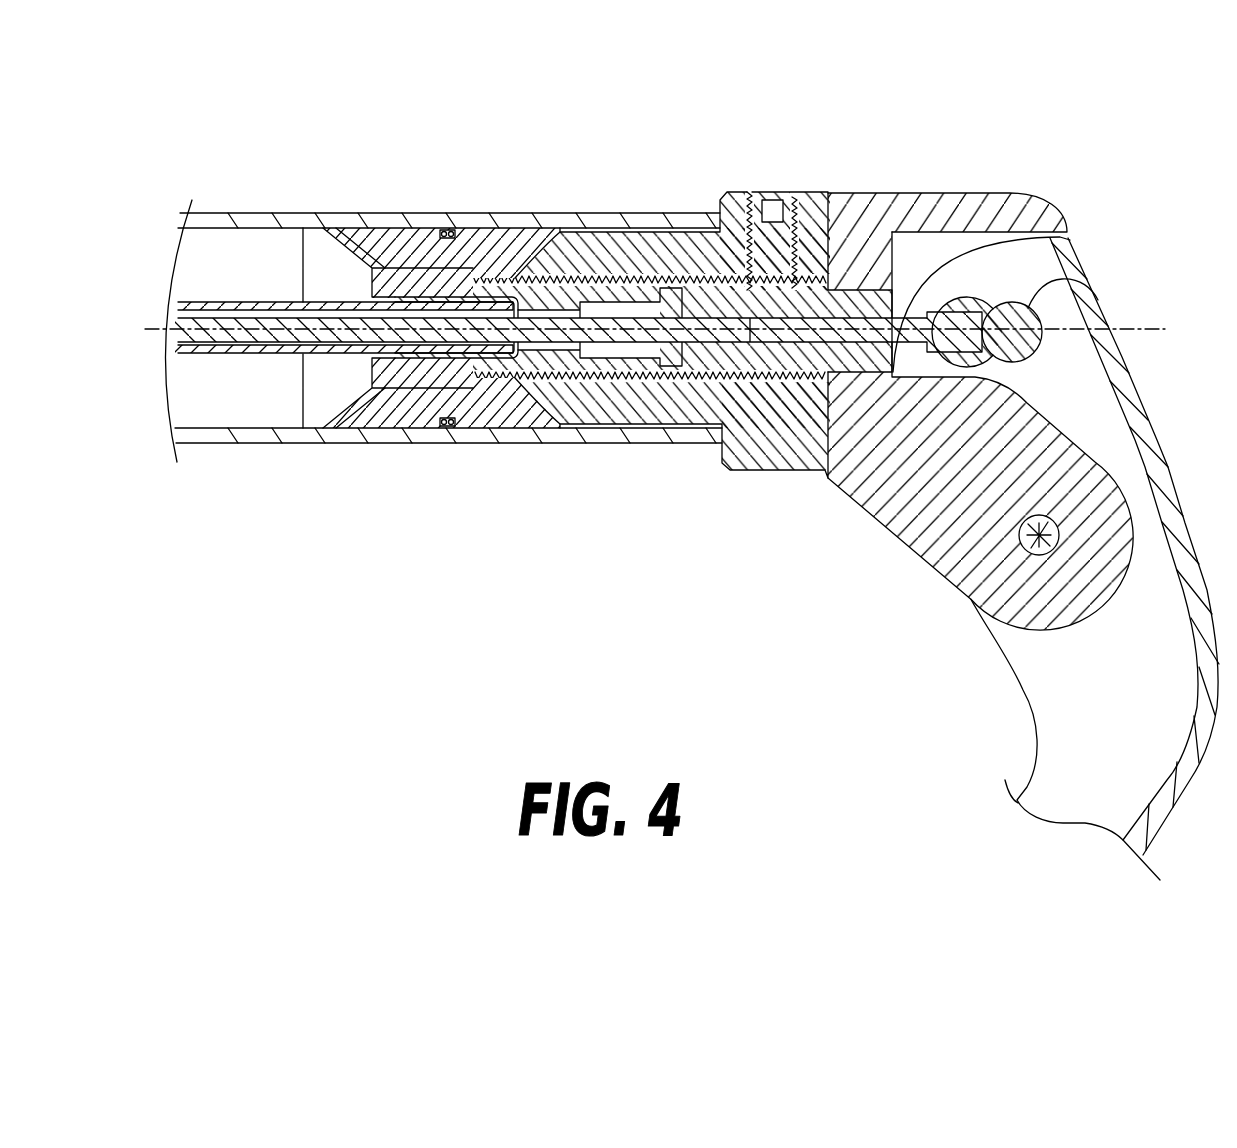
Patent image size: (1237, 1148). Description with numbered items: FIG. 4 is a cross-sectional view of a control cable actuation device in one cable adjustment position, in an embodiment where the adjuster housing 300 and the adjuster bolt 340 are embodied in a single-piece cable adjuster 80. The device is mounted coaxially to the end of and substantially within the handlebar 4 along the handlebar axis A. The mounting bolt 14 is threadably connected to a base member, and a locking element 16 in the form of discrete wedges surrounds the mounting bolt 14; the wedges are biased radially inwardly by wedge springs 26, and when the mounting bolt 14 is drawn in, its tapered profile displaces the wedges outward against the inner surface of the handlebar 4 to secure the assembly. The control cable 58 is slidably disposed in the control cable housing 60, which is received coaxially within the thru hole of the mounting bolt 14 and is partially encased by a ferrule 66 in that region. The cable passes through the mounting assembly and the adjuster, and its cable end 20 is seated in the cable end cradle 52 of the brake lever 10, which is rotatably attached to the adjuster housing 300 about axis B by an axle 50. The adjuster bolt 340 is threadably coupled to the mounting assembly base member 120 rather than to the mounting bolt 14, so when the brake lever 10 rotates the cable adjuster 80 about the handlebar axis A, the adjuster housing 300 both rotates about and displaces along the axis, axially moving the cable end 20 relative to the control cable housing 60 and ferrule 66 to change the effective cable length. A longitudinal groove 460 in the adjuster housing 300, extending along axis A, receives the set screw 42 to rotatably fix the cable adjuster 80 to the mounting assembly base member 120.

The handlebar 4 is at (243, 212).
The brake lever 10 is at (1103, 296).
The mounting bolt 14 is at (330, 394).
The locking element 16 is at (382, 245).
The cable end 20 is at (1095, 292).
The wedge springs 26 is at (447, 231).
The set screw 42 is at (765, 200).
The axle 50 is at (1063, 515).
The cable end cradle 52 is at (949, 297).
The control cable 58 is at (430, 340).
The control cable housing 60 is at (268, 302).
The ferrule 66 is at (392, 358).
The cable adjuster 80 is at (1060, 181).
The mounting assembly base member 120 is at (722, 200).
The adjuster housing 300 is at (897, 523).
The adjuster bolt 340 is at (692, 290).
The longitudinal groove 460 is at (745, 285).
The handlebar axis A is at (666, 334).
The axis B is at (1047, 532).